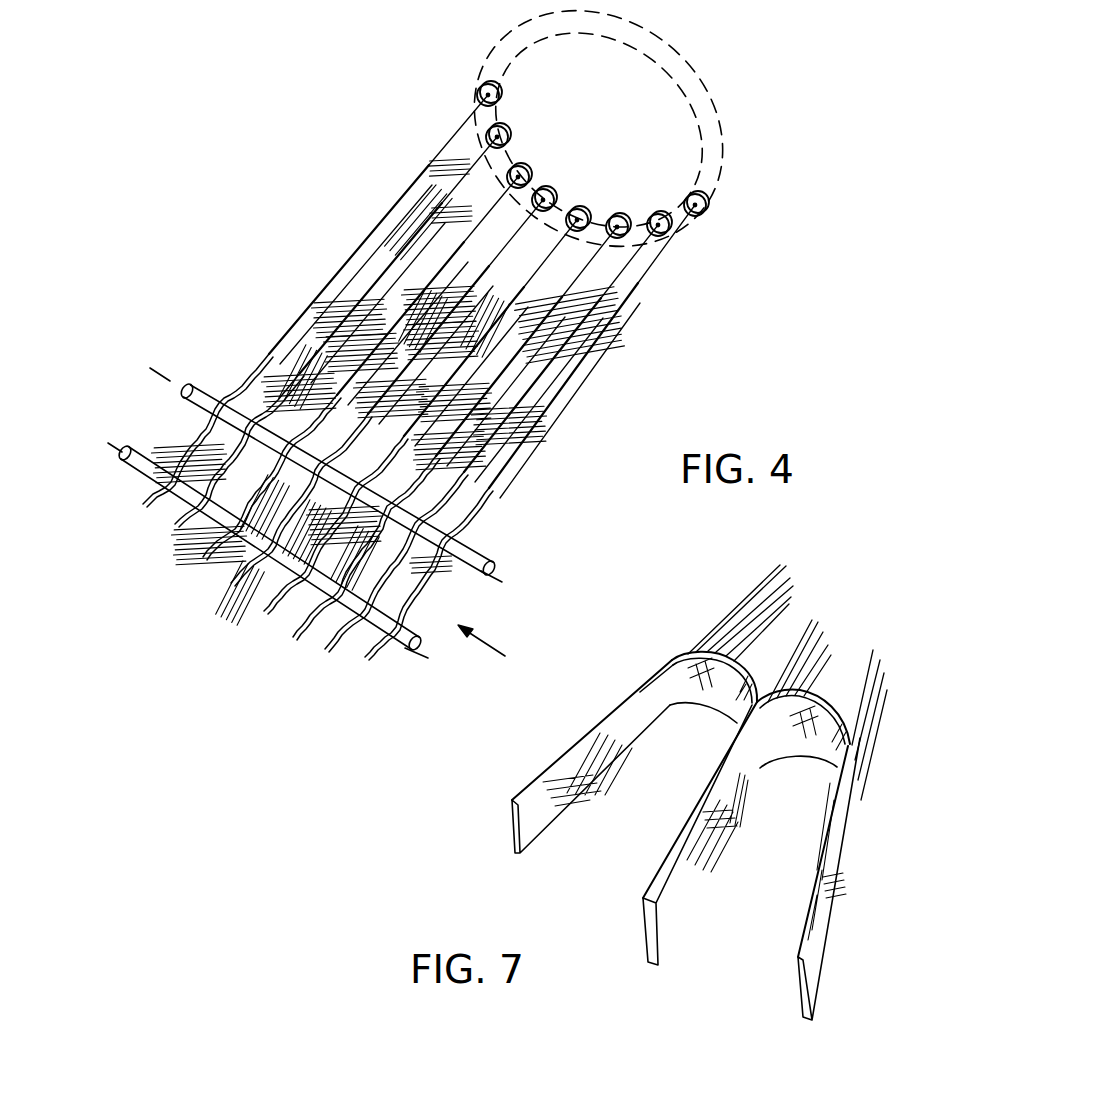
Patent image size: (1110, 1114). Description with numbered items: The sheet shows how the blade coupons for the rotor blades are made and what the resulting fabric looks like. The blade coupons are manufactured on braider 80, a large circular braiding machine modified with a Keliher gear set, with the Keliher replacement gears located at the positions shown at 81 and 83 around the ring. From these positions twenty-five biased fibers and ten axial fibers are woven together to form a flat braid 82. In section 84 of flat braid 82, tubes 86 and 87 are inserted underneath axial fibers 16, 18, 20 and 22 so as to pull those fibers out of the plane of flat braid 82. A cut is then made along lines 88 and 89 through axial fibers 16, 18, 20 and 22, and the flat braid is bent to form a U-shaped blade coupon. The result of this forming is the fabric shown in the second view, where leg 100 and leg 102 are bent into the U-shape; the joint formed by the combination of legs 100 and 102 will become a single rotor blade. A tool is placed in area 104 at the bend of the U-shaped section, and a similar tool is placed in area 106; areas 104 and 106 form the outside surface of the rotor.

In FIG. 4, the braider 80 is at (725, 130).
In FIG. 4, the Keliher replacement gear position 81 is at (477, 99).
In FIG. 4, the flat braid 82 is at (588, 371).
In FIG. 4, the Keliher replacement gear position 83 is at (703, 216).
In FIG. 4, the section of flat braid 84 is at (501, 651).
In FIG. 4, the tube 86 is at (480, 550).
In FIG. 4, the tube 87 is at (403, 657).
In FIG. 4, the cut line 88 is at (208, 389).
In FIG. 4, the cut line 89 is at (130, 450).
In FIG. 4, the axial fiber 16 is at (327, 657).
In FIG. 4, the axial fiber 18 is at (299, 640).
In FIG. 4, the axial fiber 20 is at (268, 615).
In FIG. 4, the axial fiber 22 is at (230, 591).
In FIG. 7, the leg 100 is at (699, 792).
In FIG. 7, the leg 102 is at (644, 876).
In FIG. 7, the area at bend of U-shaped section 104 is at (717, 703).
In FIG. 7, the area at bend of U-shaped section 106 is at (812, 750).